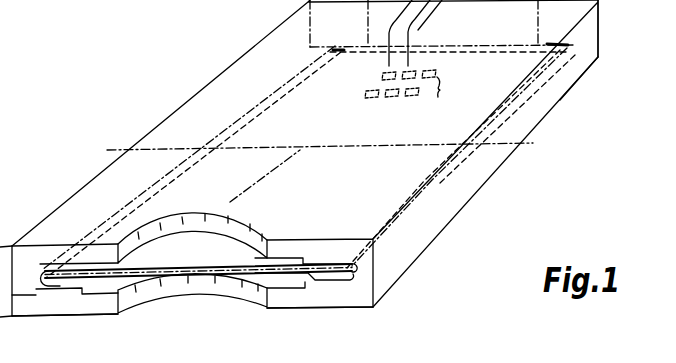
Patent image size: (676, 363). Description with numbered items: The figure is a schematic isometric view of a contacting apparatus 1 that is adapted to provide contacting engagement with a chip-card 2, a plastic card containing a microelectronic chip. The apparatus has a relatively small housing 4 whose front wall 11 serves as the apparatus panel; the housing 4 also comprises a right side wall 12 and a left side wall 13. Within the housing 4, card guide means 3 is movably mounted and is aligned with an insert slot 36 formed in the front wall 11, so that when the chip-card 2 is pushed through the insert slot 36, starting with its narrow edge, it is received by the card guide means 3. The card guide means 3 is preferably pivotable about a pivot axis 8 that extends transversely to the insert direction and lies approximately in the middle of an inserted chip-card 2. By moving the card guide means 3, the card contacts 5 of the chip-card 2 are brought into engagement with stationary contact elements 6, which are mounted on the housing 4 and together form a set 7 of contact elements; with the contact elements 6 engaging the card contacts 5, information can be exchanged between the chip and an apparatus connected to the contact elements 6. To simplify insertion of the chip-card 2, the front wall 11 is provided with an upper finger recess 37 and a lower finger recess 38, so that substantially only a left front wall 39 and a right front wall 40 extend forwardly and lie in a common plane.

The contacting apparatus 1 is at (157, 111).
The chip-card 2 is at (277, 155).
The card guide means 3 is at (466, 152).
The housing 4 is at (200, 92).
The card contacts 5 is at (413, 91).
The contact elements 6 is at (382, 75).
The set of contact elements 7 is at (432, 27).
The pivot axis 8 is at (530, 139).
The front wall 11 is at (277, 300).
The right side wall 12 is at (450, 198).
The left side wall 13 is at (50, 215).
The insert slot 36 is at (46, 287).
The upper finger recess 37 is at (147, 236).
The lower finger recess 38 is at (152, 288).
The left front wall 39 is at (70, 300).
The right front wall 40 is at (318, 295).